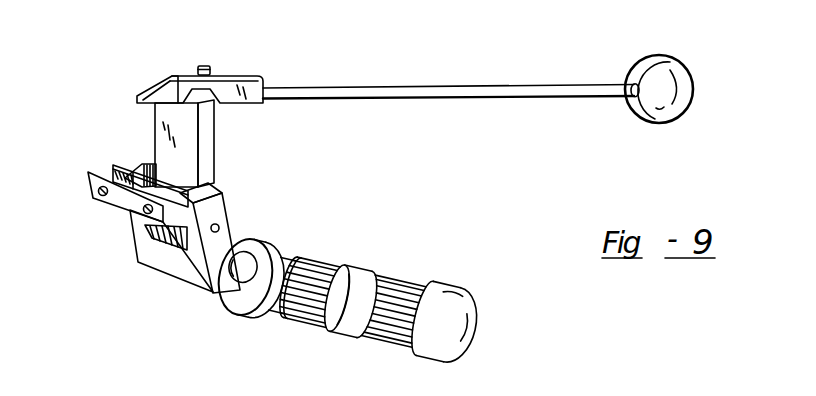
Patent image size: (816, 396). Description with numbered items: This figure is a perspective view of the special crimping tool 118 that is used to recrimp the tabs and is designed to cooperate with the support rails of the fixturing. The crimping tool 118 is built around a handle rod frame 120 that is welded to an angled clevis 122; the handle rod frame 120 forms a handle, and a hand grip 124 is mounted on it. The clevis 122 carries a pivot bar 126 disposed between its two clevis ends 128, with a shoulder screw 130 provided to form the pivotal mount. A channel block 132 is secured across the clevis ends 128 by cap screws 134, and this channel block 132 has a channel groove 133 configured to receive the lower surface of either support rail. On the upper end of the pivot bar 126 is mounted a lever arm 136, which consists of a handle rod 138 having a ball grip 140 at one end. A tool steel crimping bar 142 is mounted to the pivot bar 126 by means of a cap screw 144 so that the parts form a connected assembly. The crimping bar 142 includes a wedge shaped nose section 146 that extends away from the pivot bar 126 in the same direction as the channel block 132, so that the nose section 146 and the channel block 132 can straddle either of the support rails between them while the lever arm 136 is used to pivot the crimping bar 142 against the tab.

The crimping tool 118 is at (252, 201).
The handle rod frame 120 is at (272, 253).
The angled clevis 122 is at (173, 280).
The hand grip 124 is at (384, 280).
The pivot bar 126 is at (217, 138).
The clevis ends 128 is at (135, 167).
The shoulder screw 130 is at (222, 228).
The channel block 132 is at (88, 190).
The channel groove 133 is at (107, 170).
The cap screws 134 is at (93, 200).
The lever arm 136 is at (272, 77).
The handle rod 138 is at (415, 60).
The ball grip 140 is at (717, 49).
The crimping bar 142 is at (192, 66).
The cap screw 144 is at (210, 67).
The wedge shaped nose section 146 is at (147, 90).